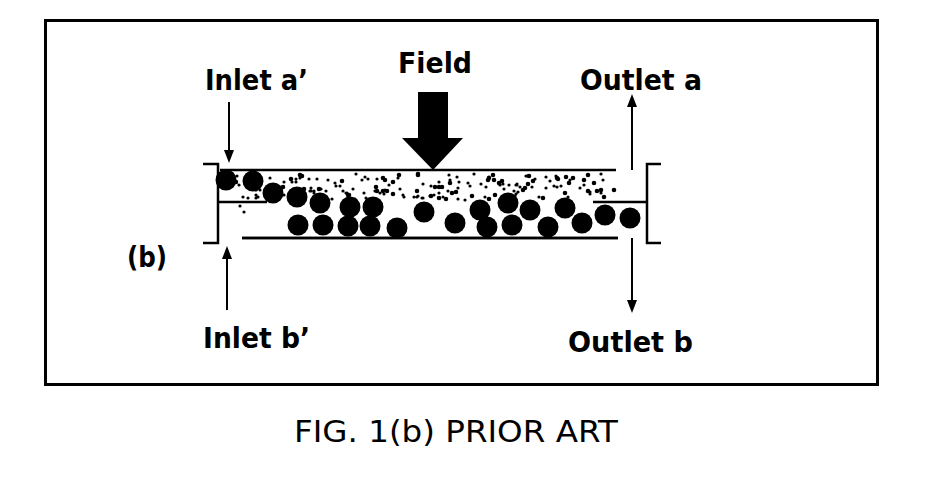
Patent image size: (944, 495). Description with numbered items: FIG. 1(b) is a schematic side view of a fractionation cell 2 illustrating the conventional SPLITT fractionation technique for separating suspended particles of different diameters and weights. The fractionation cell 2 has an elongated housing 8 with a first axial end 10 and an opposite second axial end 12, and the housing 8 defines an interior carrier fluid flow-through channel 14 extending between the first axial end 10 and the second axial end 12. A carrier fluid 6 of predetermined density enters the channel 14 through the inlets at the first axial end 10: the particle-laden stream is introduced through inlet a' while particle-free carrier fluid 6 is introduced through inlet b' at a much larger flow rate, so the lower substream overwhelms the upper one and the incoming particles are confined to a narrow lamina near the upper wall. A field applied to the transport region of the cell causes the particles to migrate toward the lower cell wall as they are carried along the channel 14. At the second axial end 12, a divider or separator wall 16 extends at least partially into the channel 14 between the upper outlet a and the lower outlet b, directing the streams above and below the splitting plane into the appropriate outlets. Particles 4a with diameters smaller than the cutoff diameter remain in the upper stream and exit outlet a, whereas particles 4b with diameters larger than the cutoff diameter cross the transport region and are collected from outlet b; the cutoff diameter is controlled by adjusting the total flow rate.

The fractionation cell 2 is at (380, 283).
The particles having a diameter less than the cutoff diameter 4a is at (512, 170).
The particles having a diameter greater than the cutoff diameter 4b is at (445, 232).
The carrier fluid 6 is at (262, 220).
The elongated housing 8 is at (562, 240).
The first axial end 10 is at (184, 220).
The second axial end 12 is at (678, 228).
The carrier fluid flow-through channel 14 is at (532, 225).
The divider or separator wall 16 is at (647, 212).